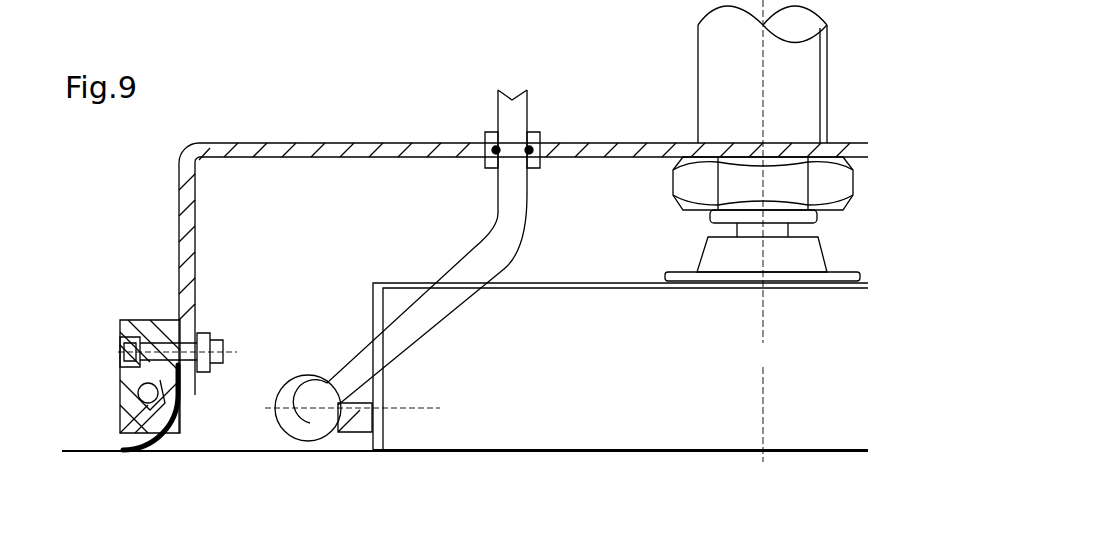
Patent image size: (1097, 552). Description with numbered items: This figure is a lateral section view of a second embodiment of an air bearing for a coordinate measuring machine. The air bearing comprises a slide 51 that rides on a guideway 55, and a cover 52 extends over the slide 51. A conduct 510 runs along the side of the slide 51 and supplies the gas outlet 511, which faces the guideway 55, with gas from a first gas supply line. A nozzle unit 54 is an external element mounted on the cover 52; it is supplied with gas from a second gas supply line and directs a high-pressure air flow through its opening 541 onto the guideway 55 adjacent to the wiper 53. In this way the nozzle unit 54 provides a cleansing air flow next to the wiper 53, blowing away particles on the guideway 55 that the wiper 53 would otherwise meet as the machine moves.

The slide 51 is at (616, 381).
The gas outlet 511 is at (657, 448).
The cover 52 is at (303, 256).
The wiper 53 is at (176, 428).
The nozzle unit 54 is at (120, 318).
The opening 541 is at (118, 417).
The guideway 55 is at (75, 448).
The conduct 510 is at (498, 198).